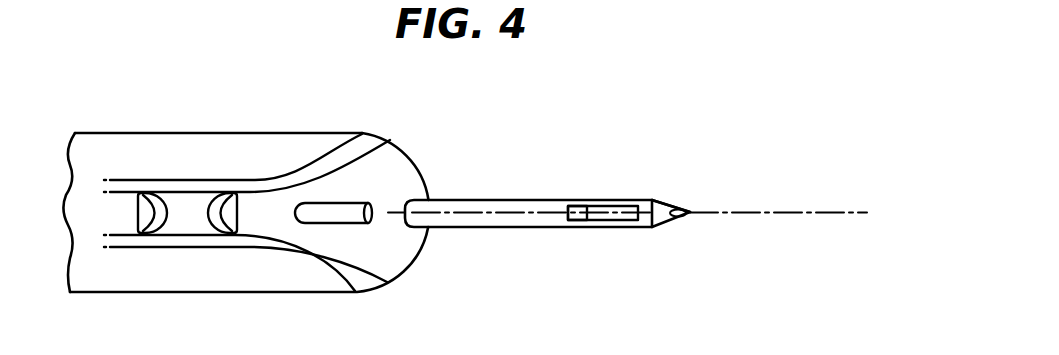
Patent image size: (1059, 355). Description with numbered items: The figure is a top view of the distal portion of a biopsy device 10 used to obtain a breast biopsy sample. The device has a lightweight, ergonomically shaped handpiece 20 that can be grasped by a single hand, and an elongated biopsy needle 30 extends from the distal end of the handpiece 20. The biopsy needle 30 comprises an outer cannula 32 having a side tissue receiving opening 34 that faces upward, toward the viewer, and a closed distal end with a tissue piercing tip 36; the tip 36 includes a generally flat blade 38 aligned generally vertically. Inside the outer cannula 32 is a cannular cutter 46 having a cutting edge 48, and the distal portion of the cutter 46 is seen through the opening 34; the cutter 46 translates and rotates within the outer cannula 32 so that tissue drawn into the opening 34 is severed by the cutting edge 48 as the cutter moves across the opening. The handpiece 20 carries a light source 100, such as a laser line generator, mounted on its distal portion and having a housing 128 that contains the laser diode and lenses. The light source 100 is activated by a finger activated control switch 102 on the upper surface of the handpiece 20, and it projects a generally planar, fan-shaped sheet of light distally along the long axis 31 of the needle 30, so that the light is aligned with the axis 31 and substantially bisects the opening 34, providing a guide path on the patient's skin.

The biopsy device 10 is at (163, 86).
The handpiece 20 is at (122, 155).
The finger activated control switch 102 is at (188, 210).
The housing 128 is at (327, 203).
The light source 100 is at (360, 185).
The biopsy needle 30 is at (530, 241).
The outer cannula 32 is at (475, 198).
The tissue receiving opening 34 is at (623, 207).
The tissue piercing tip 36 is at (693, 200).
The flat blade 38 is at (690, 213).
The cannular cutter 46 is at (578, 207).
The cutting edge 48 is at (592, 208).
The long axis of the needle 31 is at (818, 212).